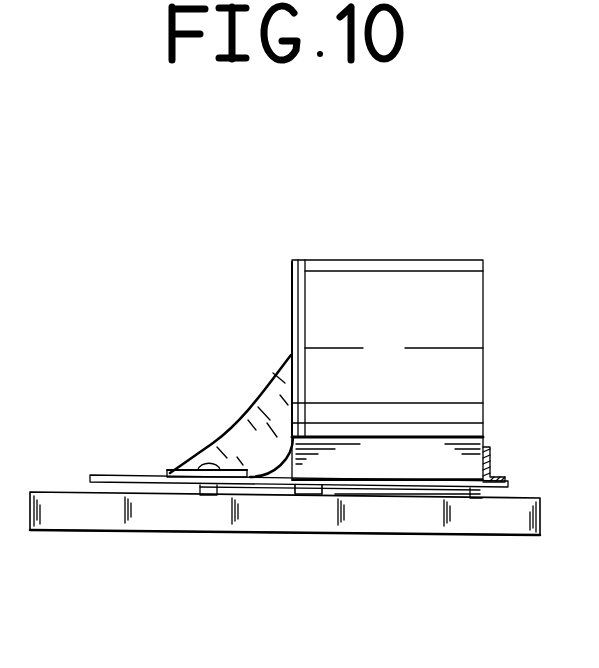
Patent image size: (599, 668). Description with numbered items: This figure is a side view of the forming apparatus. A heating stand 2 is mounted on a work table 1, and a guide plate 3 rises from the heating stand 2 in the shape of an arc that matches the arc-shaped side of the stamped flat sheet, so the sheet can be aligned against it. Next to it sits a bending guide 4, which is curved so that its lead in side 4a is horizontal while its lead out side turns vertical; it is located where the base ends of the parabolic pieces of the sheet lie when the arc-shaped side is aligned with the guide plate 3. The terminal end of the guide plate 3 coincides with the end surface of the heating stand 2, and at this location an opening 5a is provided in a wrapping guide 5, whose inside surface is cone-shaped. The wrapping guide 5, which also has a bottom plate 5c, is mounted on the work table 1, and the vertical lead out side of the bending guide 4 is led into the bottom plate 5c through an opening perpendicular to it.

The work table 1 is at (280, 517).
The heating stand 2 is at (108, 482).
The guide plate 3 is at (487, 462).
The bending guide 4 is at (199, 397).
The lead in side 4a is at (184, 466).
The wrapping guide 5 is at (335, 398).
The opening 5a is at (413, 458).
The bottom plate 5c is at (290, 303).